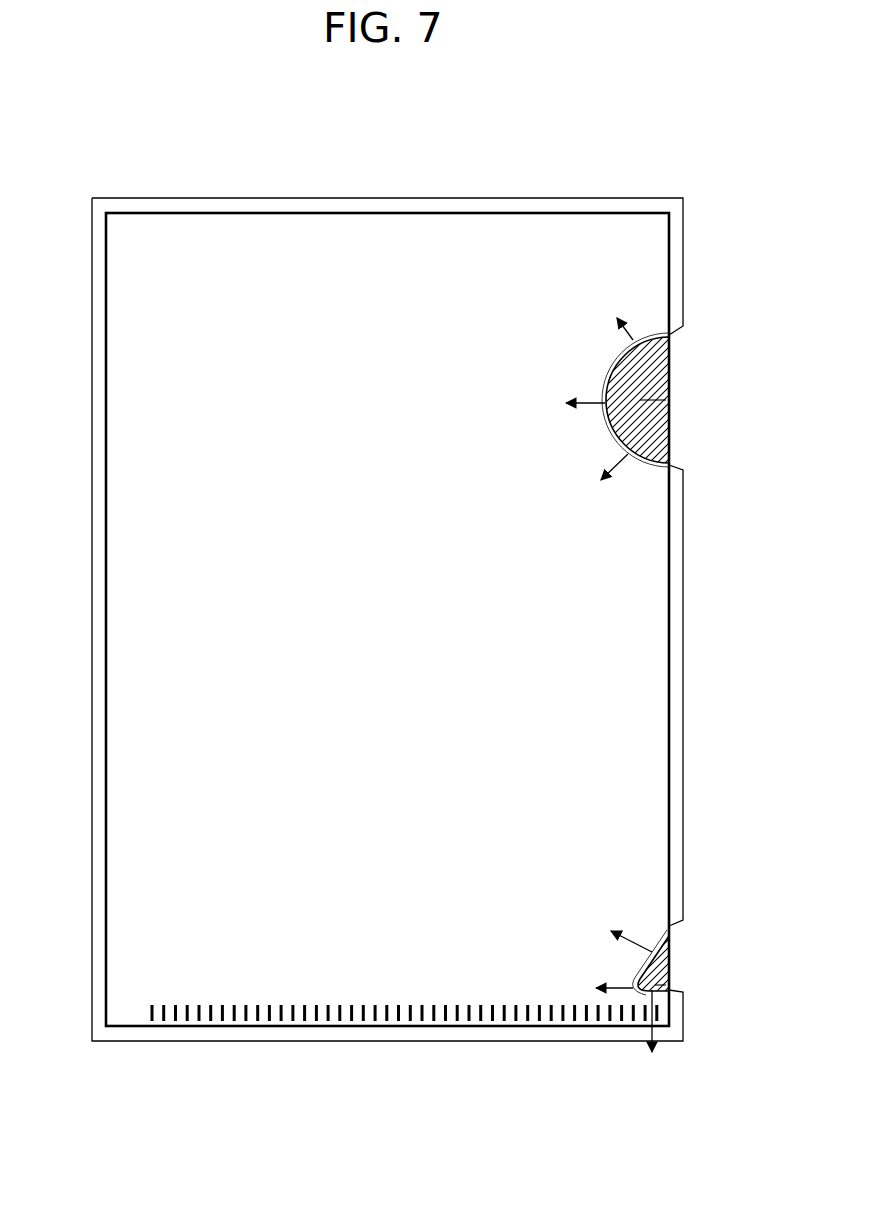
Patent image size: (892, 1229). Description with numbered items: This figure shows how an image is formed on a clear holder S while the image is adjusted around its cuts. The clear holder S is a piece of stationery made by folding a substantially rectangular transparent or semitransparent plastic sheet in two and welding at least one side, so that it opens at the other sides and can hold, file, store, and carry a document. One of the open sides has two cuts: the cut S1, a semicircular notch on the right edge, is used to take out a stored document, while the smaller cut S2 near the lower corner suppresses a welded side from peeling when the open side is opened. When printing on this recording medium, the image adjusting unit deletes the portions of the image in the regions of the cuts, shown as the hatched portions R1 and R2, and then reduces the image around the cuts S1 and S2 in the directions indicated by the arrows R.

The clear holder S is at (207, 232).
The cut S1 is at (643, 404).
The hatched portion R1 is at (640, 412).
The cut S2 is at (662, 972).
The hatched portion R2 is at (668, 986).
The arrows R is at (594, 688).